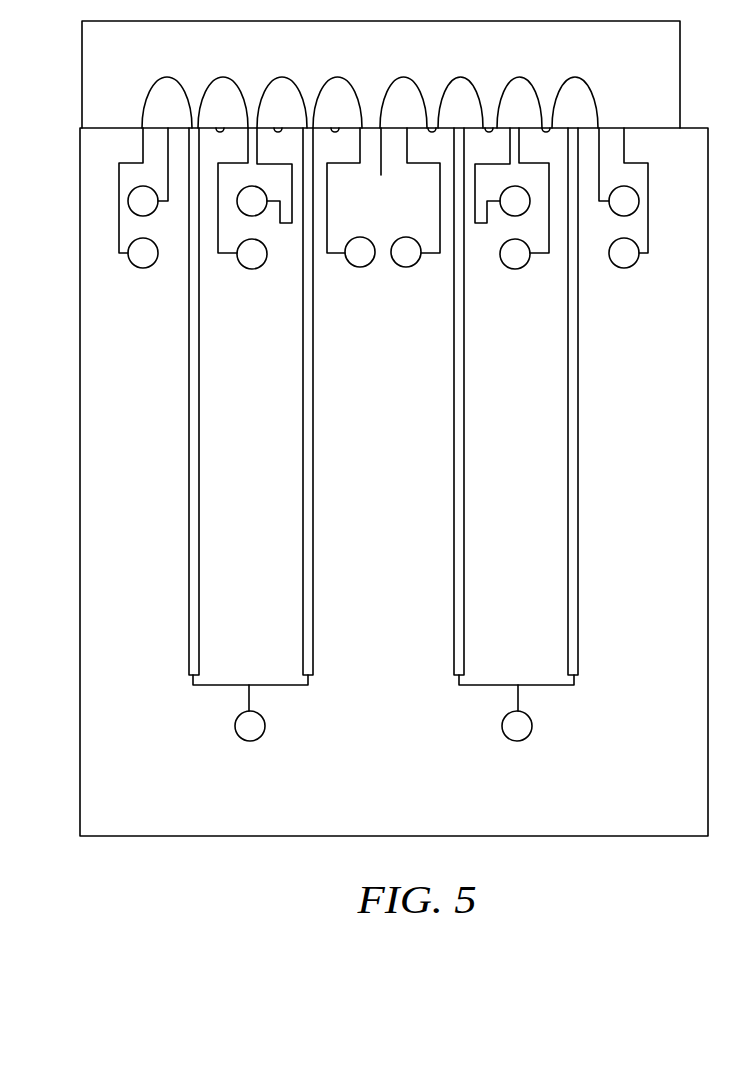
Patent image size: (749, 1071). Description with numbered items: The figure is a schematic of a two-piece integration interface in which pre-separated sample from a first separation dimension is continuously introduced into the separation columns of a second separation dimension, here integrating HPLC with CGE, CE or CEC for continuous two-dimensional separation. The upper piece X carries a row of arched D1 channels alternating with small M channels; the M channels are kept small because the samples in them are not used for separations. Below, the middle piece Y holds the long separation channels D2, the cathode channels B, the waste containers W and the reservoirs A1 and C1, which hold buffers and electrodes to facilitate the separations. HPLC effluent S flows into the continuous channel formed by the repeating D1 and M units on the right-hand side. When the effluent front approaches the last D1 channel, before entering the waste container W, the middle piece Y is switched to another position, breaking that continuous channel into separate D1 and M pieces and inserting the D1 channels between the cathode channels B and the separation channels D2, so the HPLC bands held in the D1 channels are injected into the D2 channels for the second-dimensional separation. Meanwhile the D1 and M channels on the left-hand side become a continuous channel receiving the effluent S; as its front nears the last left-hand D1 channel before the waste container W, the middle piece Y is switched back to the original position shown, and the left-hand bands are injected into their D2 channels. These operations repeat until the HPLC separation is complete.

The top piece X is at (82, 63).
The middle piece Y is at (88, 455).
The D1 channel D1 is at (295, 85).
The separation channel D2 is at (312, 473).
The HPLC effluent S is at (381, 164).
The reservoir C1 is at (362, 238).
The cathode channel B is at (332, 253).
The waste container W is at (143, 201).
The M channel M is at (278, 132).
The reservoir A1 is at (250, 726).